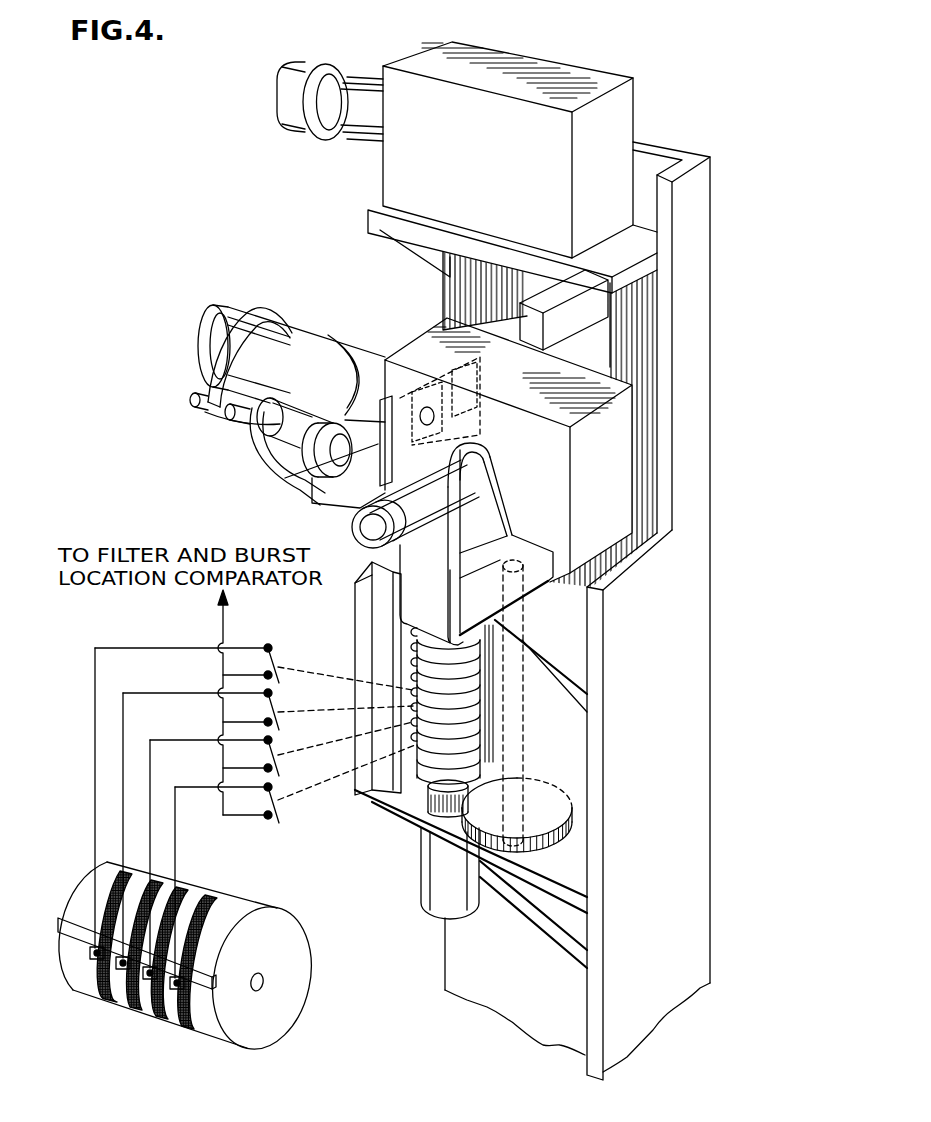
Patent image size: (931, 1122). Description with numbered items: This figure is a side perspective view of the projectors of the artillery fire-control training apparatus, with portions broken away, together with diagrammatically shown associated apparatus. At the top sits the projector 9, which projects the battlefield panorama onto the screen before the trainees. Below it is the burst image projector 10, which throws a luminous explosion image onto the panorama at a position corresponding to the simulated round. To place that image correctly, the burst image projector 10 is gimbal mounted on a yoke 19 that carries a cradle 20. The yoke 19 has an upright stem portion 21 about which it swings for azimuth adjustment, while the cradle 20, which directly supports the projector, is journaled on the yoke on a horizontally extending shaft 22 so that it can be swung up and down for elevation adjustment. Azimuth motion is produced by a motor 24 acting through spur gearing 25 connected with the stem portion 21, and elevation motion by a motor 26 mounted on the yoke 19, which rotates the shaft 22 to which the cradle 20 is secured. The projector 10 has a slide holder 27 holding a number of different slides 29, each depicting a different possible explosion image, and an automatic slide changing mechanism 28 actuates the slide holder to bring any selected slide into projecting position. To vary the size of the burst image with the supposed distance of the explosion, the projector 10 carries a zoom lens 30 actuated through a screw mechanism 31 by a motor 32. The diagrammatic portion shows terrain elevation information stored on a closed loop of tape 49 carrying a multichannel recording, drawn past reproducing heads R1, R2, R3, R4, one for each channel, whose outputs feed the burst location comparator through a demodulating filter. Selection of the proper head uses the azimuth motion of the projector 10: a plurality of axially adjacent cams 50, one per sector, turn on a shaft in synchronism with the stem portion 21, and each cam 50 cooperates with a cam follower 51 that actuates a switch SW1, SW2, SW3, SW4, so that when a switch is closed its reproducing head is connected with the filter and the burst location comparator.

The projector 9 is at (507, 49).
The burst image projector 10 is at (395, 355).
The yoke 19 is at (433, 596).
The cradle 20 is at (488, 537).
The upright stem portion 21 is at (528, 724).
The horizontally extending shaft 22 is at (472, 477).
The motor 24 is at (442, 882).
The spur gearing 25 is at (447, 822).
The motor 26 is at (370, 528).
The slide holder 27 is at (436, 388).
The automatic slide changing mechanism 28 is at (596, 320).
The slides 29 is at (466, 408).
The zoom lens 30 is at (262, 337).
The screw mechanism 31 is at (242, 427).
The motor 32 is at (293, 447).
The closed loop of tape 49 is at (181, 1038).
The cams 50 is at (437, 757).
The cam follower 51 is at (413, 650).
The switch SW1 is at (281, 811).
The switch SW2 is at (281, 766).
The switch SW3 is at (281, 722).
The switch SW4 is at (281, 678).
The reproducing head R1 is at (167, 1020).
The reproducing head R2 is at (142, 993).
The reproducing head R3 is at (117, 972).
The reproducing head R4 is at (88, 965).